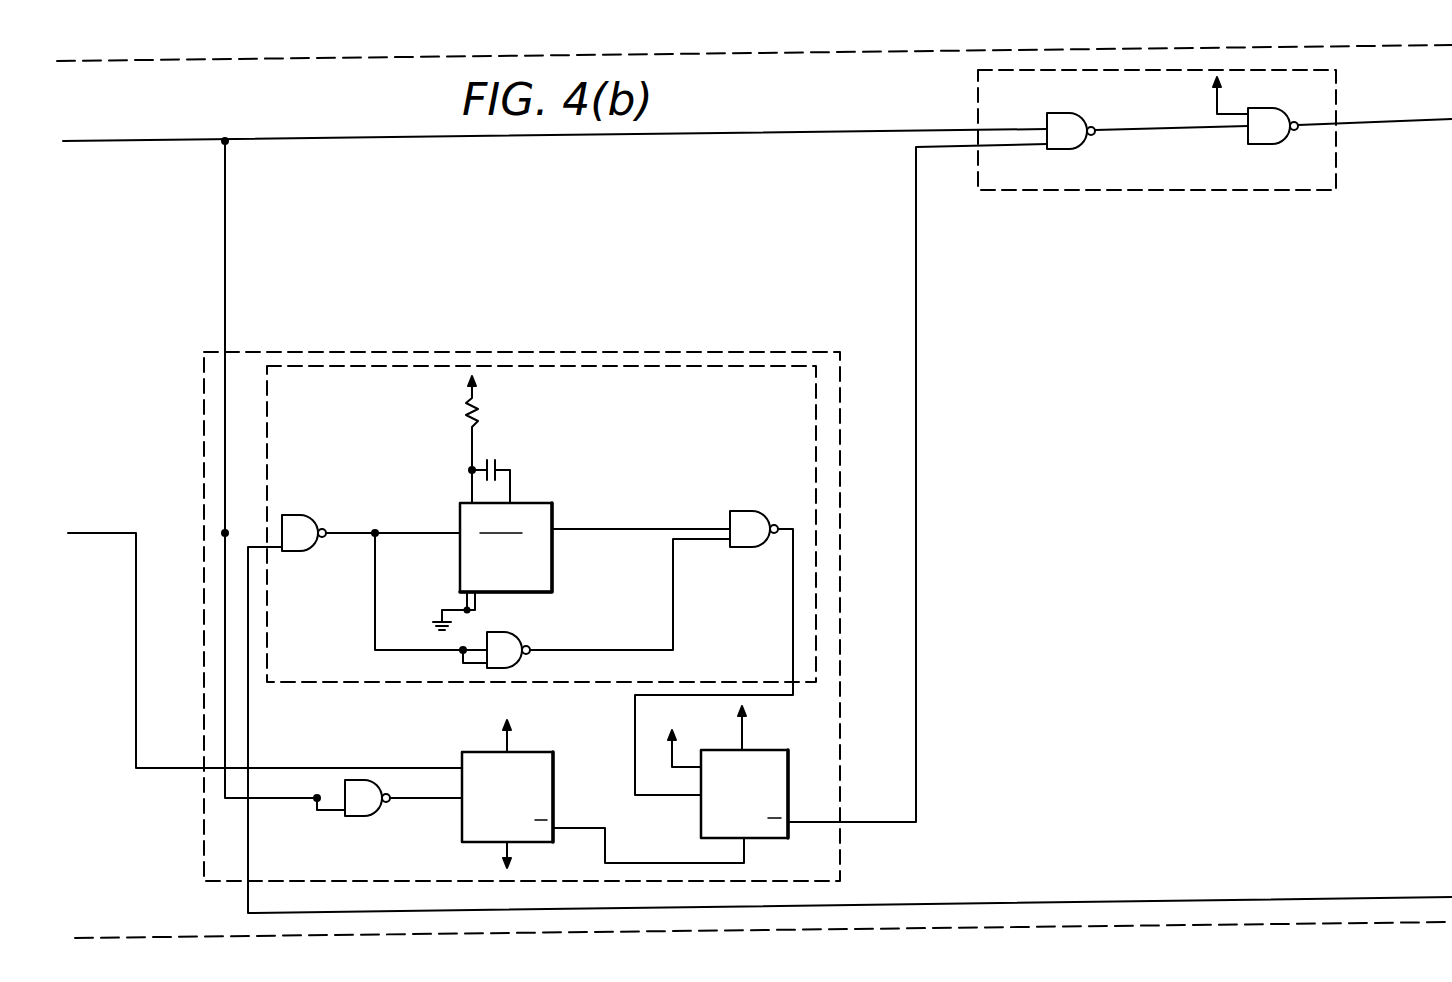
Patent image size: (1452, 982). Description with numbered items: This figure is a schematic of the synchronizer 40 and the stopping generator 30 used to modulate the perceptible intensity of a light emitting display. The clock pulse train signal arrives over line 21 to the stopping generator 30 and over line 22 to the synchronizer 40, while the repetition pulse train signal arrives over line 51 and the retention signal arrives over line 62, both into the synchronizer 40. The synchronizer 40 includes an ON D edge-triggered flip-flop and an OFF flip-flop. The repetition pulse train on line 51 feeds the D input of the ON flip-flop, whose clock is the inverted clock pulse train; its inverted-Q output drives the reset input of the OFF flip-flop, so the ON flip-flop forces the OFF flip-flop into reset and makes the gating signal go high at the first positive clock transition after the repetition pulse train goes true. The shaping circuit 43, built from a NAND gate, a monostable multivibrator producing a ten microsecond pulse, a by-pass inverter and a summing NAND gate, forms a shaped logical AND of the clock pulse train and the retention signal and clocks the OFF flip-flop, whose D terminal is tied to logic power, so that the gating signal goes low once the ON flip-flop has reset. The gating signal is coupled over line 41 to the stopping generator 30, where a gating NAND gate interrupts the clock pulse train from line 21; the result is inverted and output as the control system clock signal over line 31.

The line 21 is at (393, 138).
The line 22 is at (226, 283).
The stopping generator 30 is at (1187, 190).
The line 31 is at (1390, 128).
The synchronizer 40 is at (697, 352).
The line 41 is at (917, 318).
The shaping circuit 43 is at (816, 417).
The line 51 is at (74, 533).
The line 62 is at (249, 727).